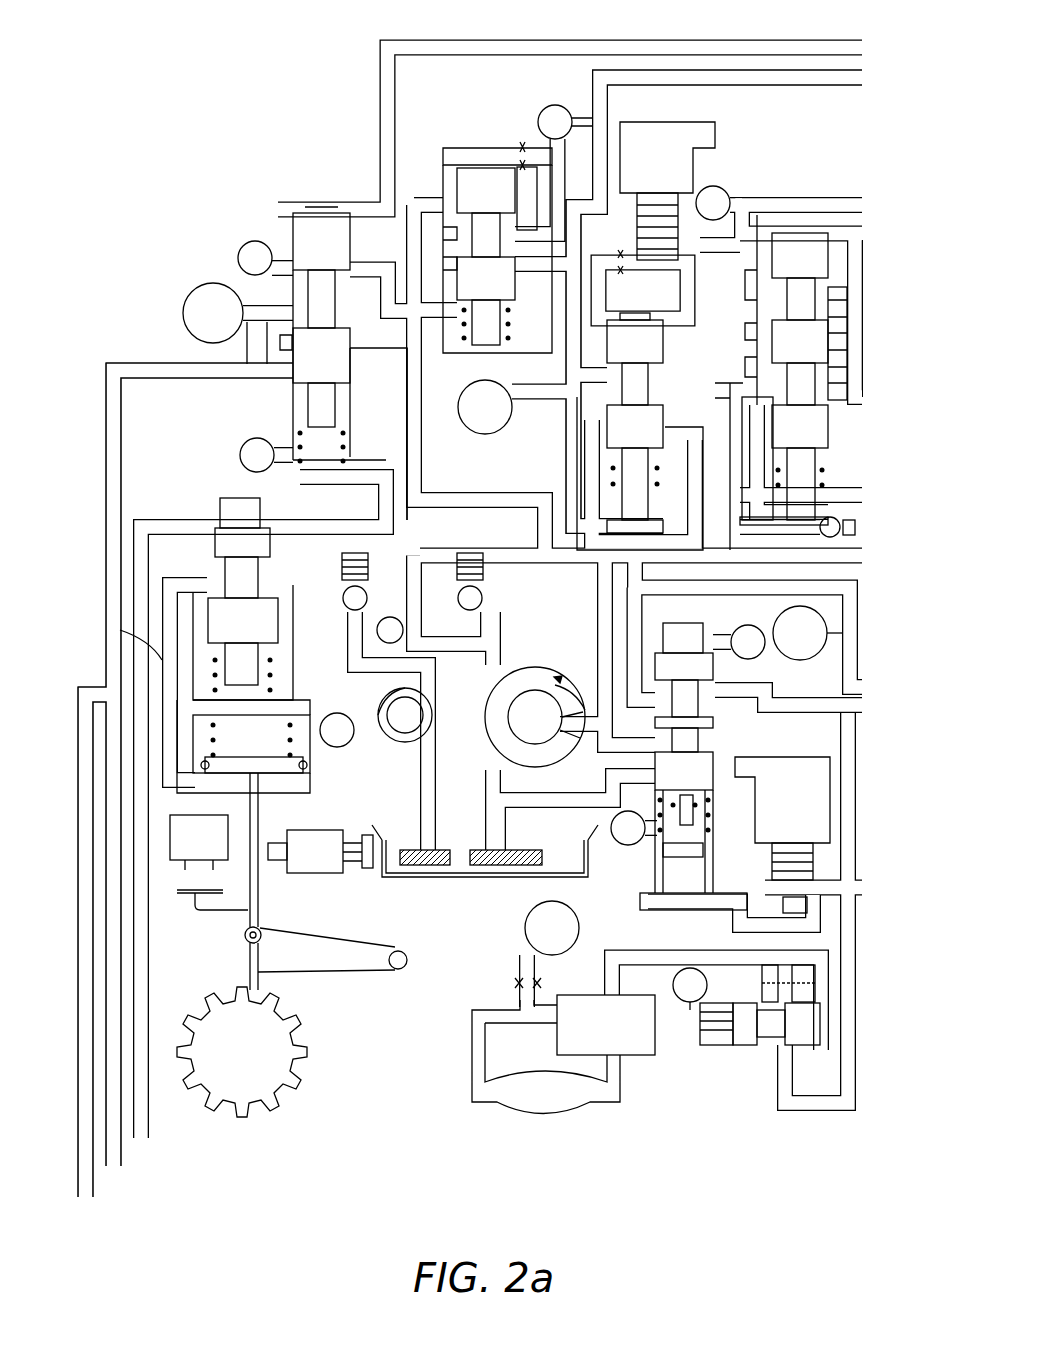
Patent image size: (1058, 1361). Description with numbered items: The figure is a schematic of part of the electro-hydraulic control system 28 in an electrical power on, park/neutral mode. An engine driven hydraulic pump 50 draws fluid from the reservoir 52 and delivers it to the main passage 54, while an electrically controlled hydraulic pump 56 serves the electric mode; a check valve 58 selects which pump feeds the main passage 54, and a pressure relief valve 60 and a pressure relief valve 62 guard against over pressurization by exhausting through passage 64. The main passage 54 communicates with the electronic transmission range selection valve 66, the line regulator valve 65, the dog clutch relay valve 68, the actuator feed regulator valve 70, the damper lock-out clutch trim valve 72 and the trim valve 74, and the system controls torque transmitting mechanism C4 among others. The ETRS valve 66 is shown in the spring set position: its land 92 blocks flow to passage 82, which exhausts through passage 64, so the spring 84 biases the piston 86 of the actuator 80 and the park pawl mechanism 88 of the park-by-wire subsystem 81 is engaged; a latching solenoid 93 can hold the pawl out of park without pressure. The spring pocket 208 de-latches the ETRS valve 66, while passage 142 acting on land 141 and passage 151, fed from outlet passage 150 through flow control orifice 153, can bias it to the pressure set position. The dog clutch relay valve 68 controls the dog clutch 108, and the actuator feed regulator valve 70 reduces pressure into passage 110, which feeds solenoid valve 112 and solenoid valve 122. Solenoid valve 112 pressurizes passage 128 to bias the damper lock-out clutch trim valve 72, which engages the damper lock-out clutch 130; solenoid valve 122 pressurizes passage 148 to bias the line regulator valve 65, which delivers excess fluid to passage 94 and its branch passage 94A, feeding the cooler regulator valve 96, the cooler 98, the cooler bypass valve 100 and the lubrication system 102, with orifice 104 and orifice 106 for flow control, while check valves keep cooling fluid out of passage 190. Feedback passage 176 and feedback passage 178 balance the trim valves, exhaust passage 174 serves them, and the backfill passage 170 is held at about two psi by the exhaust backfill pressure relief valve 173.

The electro-hydraulic control system 28 is at (250, 68).
The backfill passage 170 is at (693, 68).
The dog clutch relay valve 68 is at (290, 155).
The actuator feed regulator valve 70 is at (475, 128).
The exhaust backfill pressure relief valve 173 is at (545, 108).
The passage 110 is at (800, 198).
The solenoid valve 112 is at (675, 191).
The dog clutch 108 is at (237, 323).
The passage 128 is at (612, 303).
The damper lock-out clutch trim valve 72 is at (675, 305).
The trim valve 74 is at (745, 310).
The outlet passage 150 is at (750, 375).
The main passage 54 is at (425, 410).
The damper lock-out clutch 130 is at (485, 407).
The passage 64 is at (300, 550).
The electronic transmission range selection (ETRS) valve 66 is at (200, 475).
The passage 151 is at (500, 492).
The feedback passage 176 is at (565, 420).
The feedback passage 178 is at (780, 525).
The exhaust passage 174 is at (680, 488).
The land 141 is at (242, 527).
The land 92 is at (243, 628).
The pressure relief valve 60 is at (482, 595).
The flow control orifice 153 is at (700, 598).
The passage 82 is at (112, 637).
The pressure relief valve 62 is at (350, 612).
The check valve 58 is at (430, 640).
The hydraulic pump 50 is at (535, 668).
The passage 94 is at (822, 698).
The spring pocket 208 is at (275, 690).
The spring 84 is at (288, 727).
The piston 86 is at (305, 765).
The electrically controlled hydraulic pump 56 is at (385, 740).
The actuator 80 is at (312, 782).
The passage 94A is at (840, 735).
The solenoid valve 122 is at (782, 835).
The latching solenoid 93 is at (320, 851).
The reservoir 52 is at (485, 868).
The line regulator valve 65 is at (635, 862).
The passage 148 is at (735, 920).
The park-by-wire subsystem 81 is at (300, 893).
The lubrication system 102 is at (525, 925).
The orifice 104 is at (505, 975).
The cooler bypass valve 100 is at (606, 1025).
The park pawl mechanism 88 is at (325, 1003).
The cooler regulator valve 96 is at (735, 1058).
The cooler 98 is at (590, 1100).
The passage 142 is at (320, 1132).
The orifice 106 is at (830, 1110).
The passage 190 is at (685, 1170).
The torque transmitting mechanism C4 is at (808, 633).